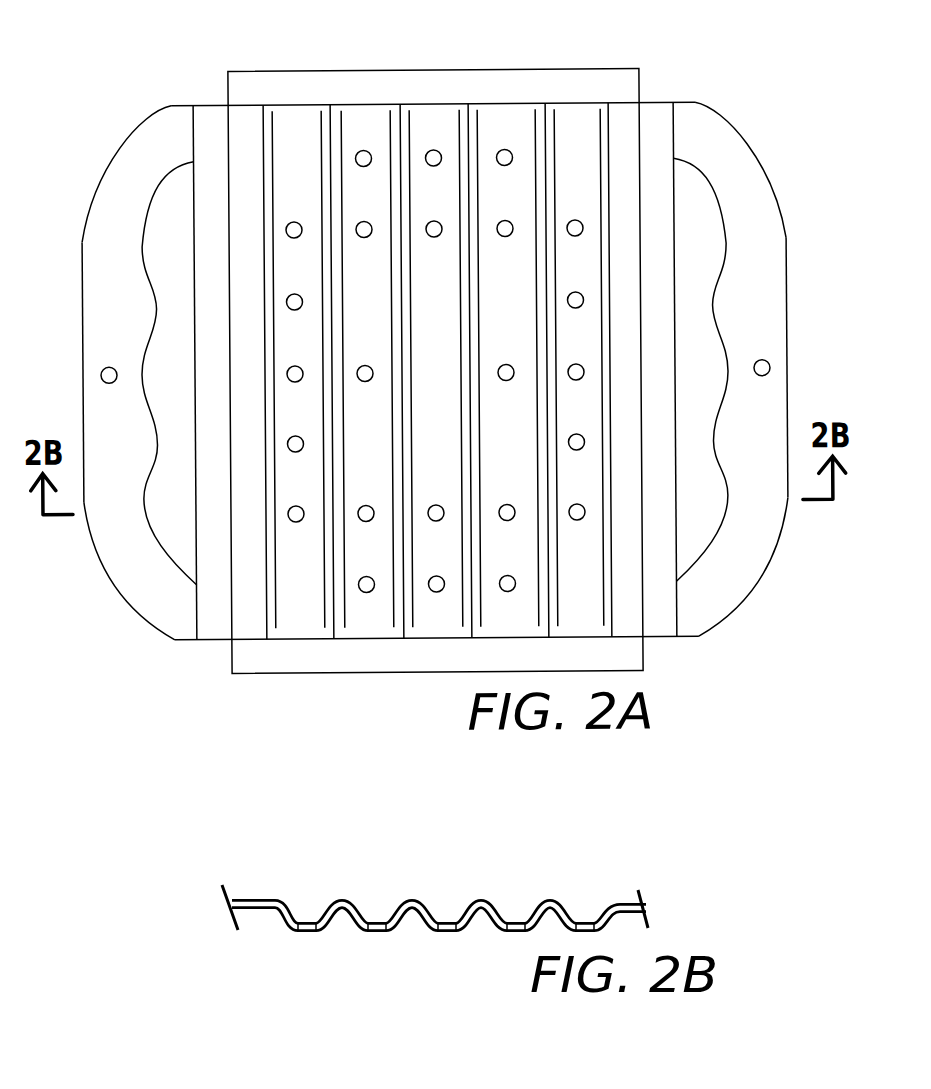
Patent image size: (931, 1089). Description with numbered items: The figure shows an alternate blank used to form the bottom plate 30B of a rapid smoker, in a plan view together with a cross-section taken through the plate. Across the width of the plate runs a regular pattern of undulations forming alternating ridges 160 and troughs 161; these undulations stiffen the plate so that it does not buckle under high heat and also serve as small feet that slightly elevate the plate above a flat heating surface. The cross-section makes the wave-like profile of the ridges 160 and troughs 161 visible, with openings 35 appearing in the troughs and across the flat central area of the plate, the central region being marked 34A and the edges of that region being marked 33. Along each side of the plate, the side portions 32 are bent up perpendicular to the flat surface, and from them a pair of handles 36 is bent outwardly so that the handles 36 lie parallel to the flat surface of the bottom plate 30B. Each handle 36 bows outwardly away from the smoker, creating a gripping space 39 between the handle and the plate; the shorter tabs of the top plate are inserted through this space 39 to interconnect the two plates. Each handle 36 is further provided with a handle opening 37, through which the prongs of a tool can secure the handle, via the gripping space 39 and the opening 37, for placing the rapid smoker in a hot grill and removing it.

In FIG. 2A, the bottom plate 30B is at (456, 382).
In FIG. 2B, the bottom plate 30B is at (414, 914).
In FIG. 2A, the side portions 32 is at (215, 104).
In FIG. 2A, the side edge of backing sheet 33 is at (642, 87).
In FIG. 2A, the corrugated sheet 34A is at (573, 117).
In FIG. 2A, the holes 35 is at (583, 292).
In FIG. 2B, the holes 35 is at (580, 920).
In FIG. 2A, the handles 36 is at (103, 177).
In FIG. 2A, the handle opening 37 is at (766, 363).
In FIG. 2A, the gripping space 39 is at (705, 489).
In FIG. 2A, the ridges 160 is at (472, 638).
In FIG. 2B, the ridges 160 is at (481, 899).
In FIG. 2A, the troughs 161 is at (433, 115).
In FIG. 2B, the troughs 161 is at (380, 935).